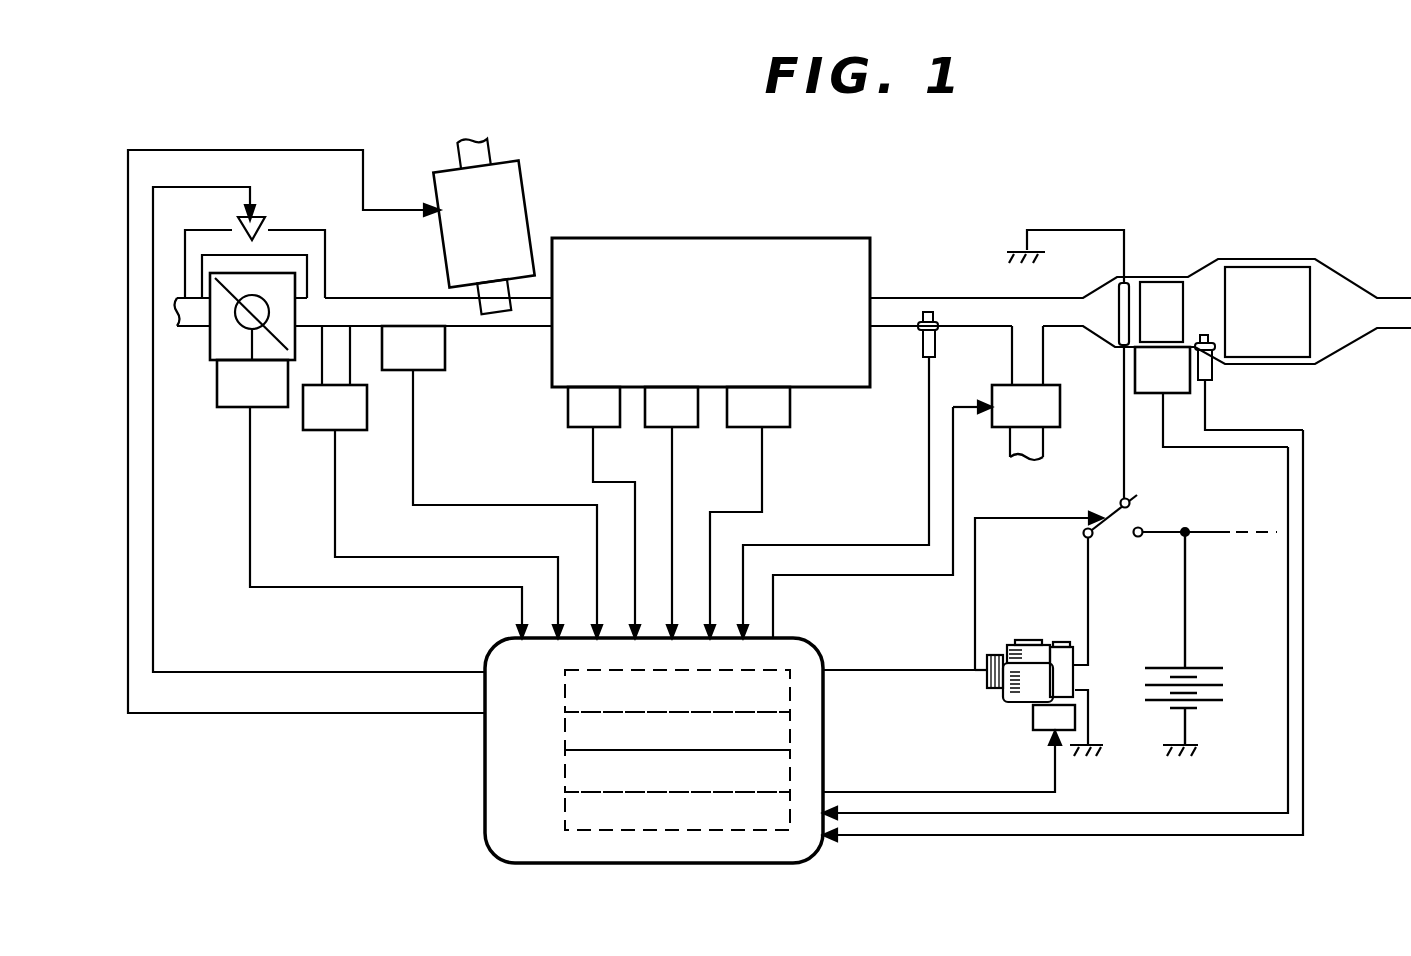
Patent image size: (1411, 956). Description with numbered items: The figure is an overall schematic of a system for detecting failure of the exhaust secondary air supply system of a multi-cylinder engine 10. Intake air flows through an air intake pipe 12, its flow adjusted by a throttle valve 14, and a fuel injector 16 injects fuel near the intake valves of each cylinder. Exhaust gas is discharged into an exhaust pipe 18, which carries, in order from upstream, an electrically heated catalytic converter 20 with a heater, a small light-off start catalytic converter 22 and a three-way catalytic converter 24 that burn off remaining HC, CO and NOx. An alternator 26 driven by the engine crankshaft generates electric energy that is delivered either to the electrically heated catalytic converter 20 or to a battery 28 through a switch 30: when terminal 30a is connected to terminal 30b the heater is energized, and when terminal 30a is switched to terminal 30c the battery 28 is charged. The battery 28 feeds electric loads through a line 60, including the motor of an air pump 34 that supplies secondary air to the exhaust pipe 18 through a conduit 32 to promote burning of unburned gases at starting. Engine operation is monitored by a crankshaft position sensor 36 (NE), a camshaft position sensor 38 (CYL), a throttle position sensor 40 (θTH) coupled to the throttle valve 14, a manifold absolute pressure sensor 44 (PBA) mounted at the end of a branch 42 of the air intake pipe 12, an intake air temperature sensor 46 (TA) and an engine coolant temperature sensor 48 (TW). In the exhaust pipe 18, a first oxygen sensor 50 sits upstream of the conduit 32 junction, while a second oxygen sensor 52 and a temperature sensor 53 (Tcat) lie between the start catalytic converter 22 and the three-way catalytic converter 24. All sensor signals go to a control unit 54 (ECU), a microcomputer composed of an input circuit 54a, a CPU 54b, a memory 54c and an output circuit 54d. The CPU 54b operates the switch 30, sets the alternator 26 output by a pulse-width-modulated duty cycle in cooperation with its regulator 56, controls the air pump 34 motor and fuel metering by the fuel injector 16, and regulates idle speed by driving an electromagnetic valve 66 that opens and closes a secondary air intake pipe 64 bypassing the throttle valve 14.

The engine 10 is at (825, 238).
The air intake pipe 12 is at (377, 298).
The throttle valve 14 is at (230, 297).
The fuel injector 16 is at (528, 213).
The exhaust pipe 18 is at (955, 297).
The electrically heated catalytic converter 20 is at (1132, 282).
The start catalytic converter 22 is at (1170, 290).
The three-way catalytic converter 24 is at (1293, 280).
The alternator 26 is at (1003, 643).
The battery 28 is at (1213, 683).
The switch 30 is at (1108, 559).
The terminal 30a is at (1083, 535).
The terminal 30b is at (1132, 502).
The terminal 30c is at (1140, 538).
The conduit 32 is at (1048, 372).
The air pump 34 is at (1000, 427).
The crankshaft position sensor 36 is at (688, 427).
The camshaft position sensor 38 is at (782, 427).
The throttle position sensor 40 is at (273, 407).
The branch 42 is at (346, 352).
The manifold absolute pressure sensor 44 is at (358, 432).
The intake air temperature sensor 46 is at (445, 358).
The engine coolant temperature sensor 48 is at (607, 428).
The first oxygen sensor 50 is at (920, 343).
The second oxygen sensor 52 is at (1212, 373).
The temperature sensor 53 is at (1152, 395).
The control unit 54 is at (648, 742).
The input circuit 54a is at (792, 673).
The CPU 54b is at (792, 732).
The memory 54c is at (792, 778).
The output circuit 54d is at (792, 818).
The regulator 56 is at (1032, 727).
The line 60 is at (1212, 532).
The secondary air intake pipe 64 is at (273, 248).
The electromagnetic valve 66 is at (238, 222).